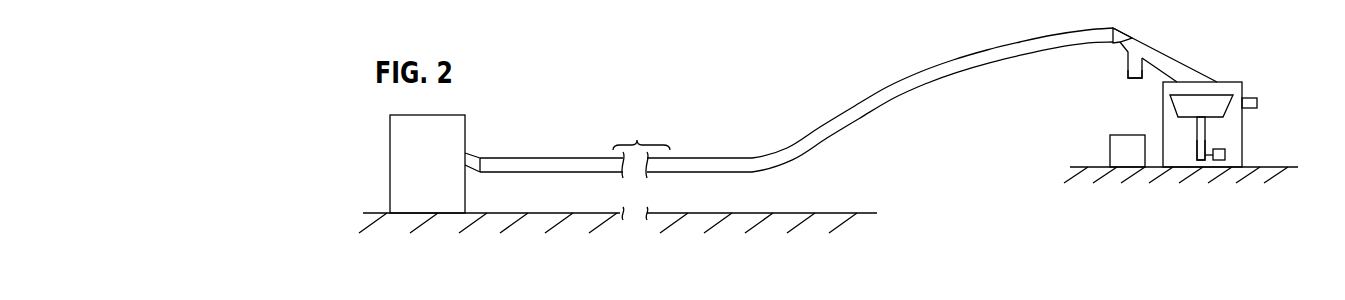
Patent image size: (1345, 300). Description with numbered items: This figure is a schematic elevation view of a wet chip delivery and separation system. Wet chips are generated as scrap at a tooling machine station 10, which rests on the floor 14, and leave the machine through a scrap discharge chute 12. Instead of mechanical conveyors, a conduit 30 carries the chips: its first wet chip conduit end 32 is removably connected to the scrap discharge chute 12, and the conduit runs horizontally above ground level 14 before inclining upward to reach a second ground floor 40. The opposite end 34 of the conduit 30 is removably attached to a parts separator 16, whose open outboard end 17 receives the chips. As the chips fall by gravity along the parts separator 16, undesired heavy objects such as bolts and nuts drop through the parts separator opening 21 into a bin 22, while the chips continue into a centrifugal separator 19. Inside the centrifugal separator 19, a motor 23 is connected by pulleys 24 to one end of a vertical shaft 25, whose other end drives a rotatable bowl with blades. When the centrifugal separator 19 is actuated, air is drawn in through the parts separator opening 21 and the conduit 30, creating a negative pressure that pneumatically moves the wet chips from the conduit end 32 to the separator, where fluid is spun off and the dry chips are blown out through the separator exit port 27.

The machine station 10 is at (397, 142).
The scrap discharge chute 12 is at (481, 157).
The floor 14 is at (598, 215).
The parts separator 16 is at (1152, 55).
The outboard end 17 is at (1115, 43).
The centrifugal separator 19 is at (1242, 118).
The parts separator opening 21 is at (1127, 78).
The bin 22 is at (1120, 148).
The motor 23 is at (1225, 157).
The pulleys 24 is at (1210, 140).
The shaft 25 is at (1195, 140).
The separator exit port 27 is at (1257, 98).
The conduit 30 is at (725, 158).
The first wet chip conduit end 32 is at (483, 172).
The opposite end 34 is at (1108, 30).
The second ground floor 40 is at (1088, 167).